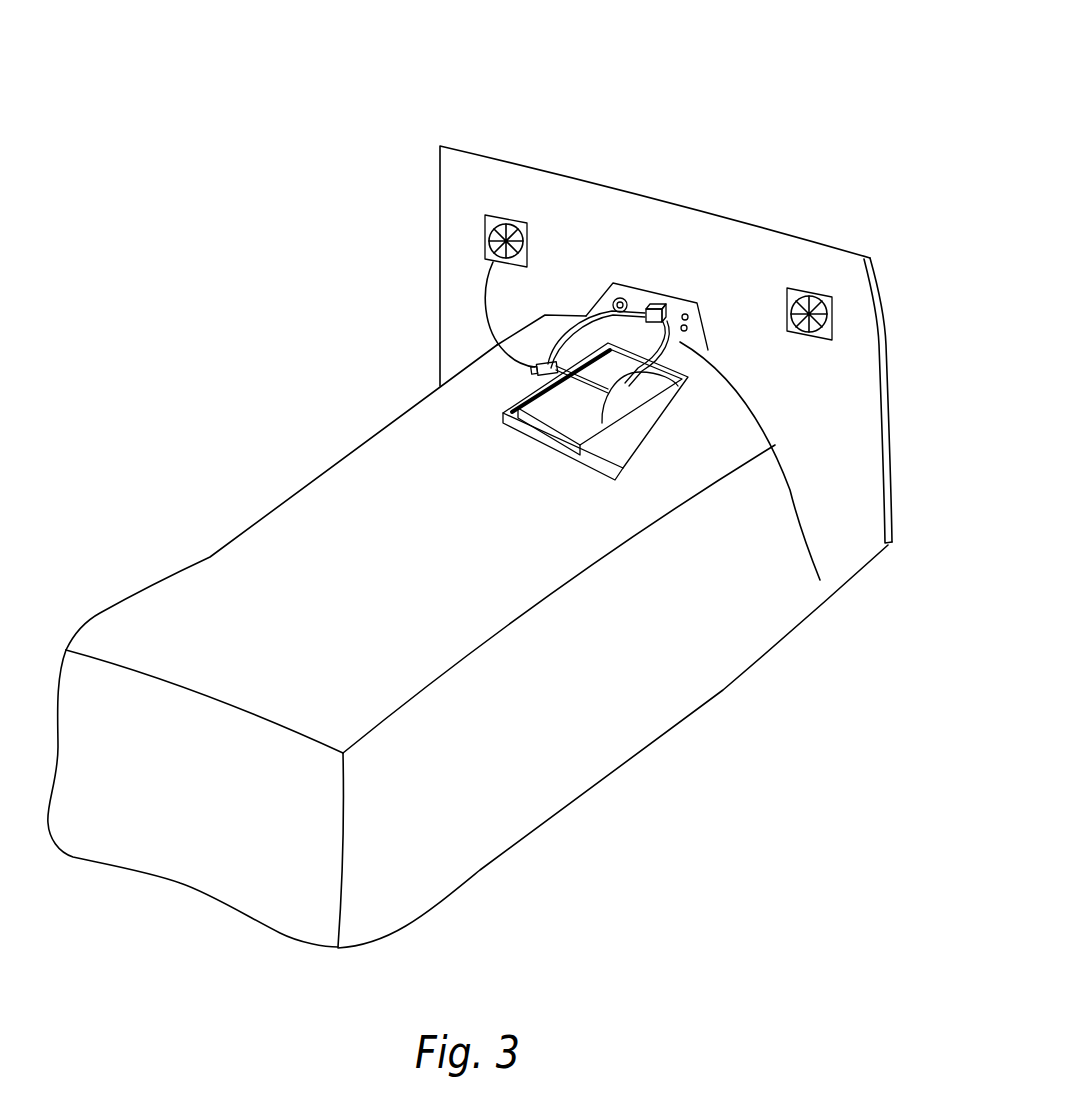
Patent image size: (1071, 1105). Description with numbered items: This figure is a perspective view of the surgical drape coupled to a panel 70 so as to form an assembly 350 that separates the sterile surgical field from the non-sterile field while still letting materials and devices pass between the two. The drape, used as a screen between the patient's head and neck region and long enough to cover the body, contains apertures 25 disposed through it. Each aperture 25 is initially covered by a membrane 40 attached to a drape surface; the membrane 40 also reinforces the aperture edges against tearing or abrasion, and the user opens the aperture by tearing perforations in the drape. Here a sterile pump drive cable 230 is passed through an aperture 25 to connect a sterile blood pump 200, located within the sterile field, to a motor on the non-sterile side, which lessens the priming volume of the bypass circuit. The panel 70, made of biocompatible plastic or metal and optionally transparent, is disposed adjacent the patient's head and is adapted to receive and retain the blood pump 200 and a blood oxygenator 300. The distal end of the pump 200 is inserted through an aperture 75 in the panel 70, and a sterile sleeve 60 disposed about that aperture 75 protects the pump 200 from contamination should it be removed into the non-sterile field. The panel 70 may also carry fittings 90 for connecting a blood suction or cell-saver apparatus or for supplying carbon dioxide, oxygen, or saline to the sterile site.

The aperture 25 is at (502, 225).
The membrane 40 is at (520, 224).
The sleeve 60 is at (487, 238).
The panel 70 is at (658, 303).
The aperture of panel 75 is at (614, 298).
The fittings 90 is at (688, 327).
The blood pump 200 is at (522, 375).
The pump drive cable 230 is at (483, 316).
The blood oxygenator 300 is at (652, 310).
The assembly 350 is at (699, 88).